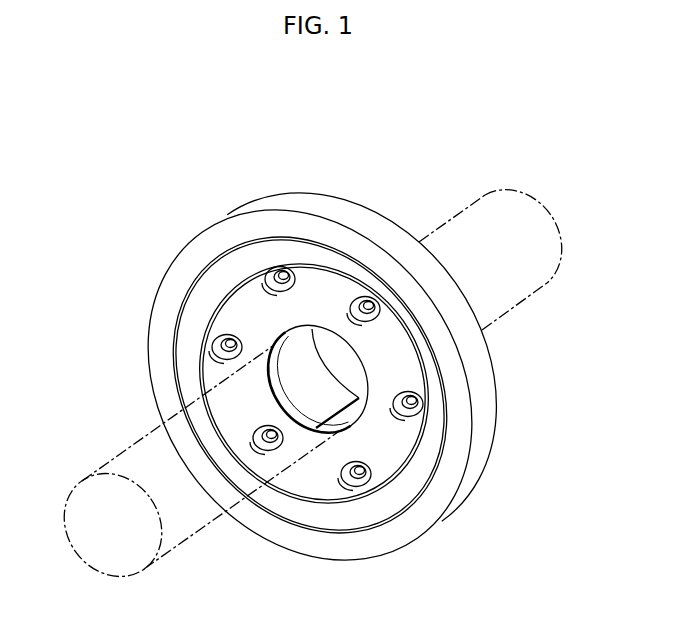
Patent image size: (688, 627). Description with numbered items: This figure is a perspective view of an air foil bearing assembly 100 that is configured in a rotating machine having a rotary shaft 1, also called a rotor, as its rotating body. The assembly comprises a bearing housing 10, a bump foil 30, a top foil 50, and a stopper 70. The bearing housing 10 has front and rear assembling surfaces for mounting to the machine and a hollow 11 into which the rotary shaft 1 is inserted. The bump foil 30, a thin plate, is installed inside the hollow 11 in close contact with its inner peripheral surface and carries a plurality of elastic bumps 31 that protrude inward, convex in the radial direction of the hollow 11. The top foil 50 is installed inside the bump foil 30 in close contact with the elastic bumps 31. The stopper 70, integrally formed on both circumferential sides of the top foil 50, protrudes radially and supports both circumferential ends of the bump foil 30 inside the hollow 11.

The air foil bearing assembly 100 is at (252, 144).
The rotary shaft 1 is at (463, 210).
The bearing housing 10 is at (349, 196).
The hollow 11 is at (270, 372).
The bump foil 30 is at (284, 413).
The elastic bumps 31 is at (272, 397).
The top foil 50 is at (322, 382).
The stopper 70 is at (348, 430).